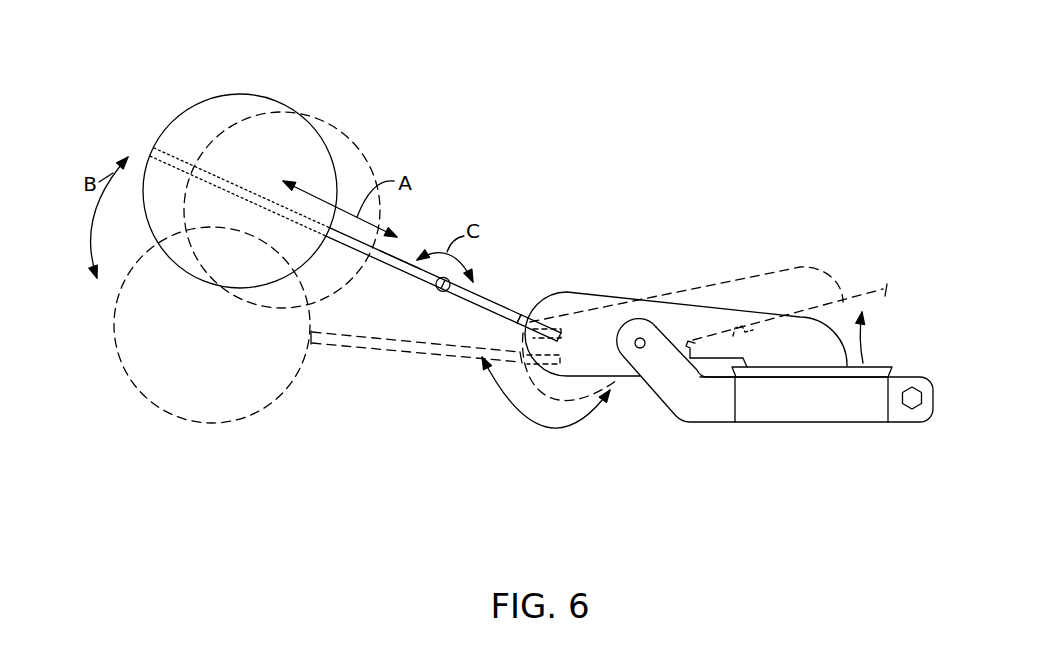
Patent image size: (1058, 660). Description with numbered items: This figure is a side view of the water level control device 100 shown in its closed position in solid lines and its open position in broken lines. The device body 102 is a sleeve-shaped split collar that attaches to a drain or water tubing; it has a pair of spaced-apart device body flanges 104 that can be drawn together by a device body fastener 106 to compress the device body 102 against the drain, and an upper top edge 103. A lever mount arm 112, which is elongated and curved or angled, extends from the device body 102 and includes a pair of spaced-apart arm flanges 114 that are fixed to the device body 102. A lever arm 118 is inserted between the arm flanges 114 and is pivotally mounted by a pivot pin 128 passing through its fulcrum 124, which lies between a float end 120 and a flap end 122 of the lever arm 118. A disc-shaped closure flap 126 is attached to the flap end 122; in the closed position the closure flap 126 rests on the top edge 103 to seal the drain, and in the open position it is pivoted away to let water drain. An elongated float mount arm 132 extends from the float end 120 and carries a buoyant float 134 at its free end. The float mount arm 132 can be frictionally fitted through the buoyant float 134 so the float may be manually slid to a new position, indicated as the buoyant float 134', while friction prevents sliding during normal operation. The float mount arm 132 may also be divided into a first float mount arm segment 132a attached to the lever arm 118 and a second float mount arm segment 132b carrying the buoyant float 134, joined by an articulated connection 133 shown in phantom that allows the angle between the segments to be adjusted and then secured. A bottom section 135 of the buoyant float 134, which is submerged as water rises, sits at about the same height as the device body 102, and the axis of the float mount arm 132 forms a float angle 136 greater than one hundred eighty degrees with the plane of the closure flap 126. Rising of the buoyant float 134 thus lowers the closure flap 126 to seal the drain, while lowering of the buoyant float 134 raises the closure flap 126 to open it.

The water level control device 100 is at (618, 167).
The device body 102 is at (868, 412).
The top edge 103 is at (878, 367).
The device body flanges 104 is at (905, 423).
The device body fastener 106 is at (926, 398).
The lever mount arm 112 is at (685, 424).
The arm flanges 114 is at (727, 415).
The lever arm 118 is at (570, 287).
The float end 120 is at (535, 305).
The flap end 122 is at (763, 330).
The fulcrum 124 is at (673, 312).
The closure flap 126 is at (881, 290).
The pivot pin 128 is at (640, 338).
The float mount arm 132 is at (493, 312).
The first float mount arm segment 132a is at (490, 300).
The second float mount arm segment 132b is at (403, 260).
The articulated connection 133 is at (436, 288).
The buoyant float 134 is at (225, 266).
The buoyant float in new position 134' is at (309, 210).
The bottom section 135 is at (197, 395).
The float angle 136 is at (540, 427).